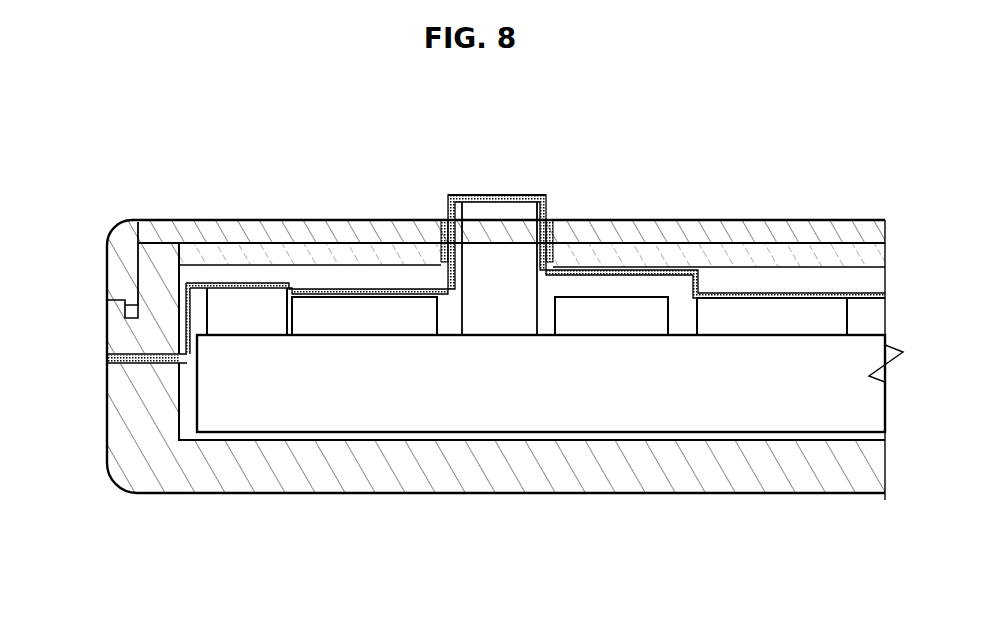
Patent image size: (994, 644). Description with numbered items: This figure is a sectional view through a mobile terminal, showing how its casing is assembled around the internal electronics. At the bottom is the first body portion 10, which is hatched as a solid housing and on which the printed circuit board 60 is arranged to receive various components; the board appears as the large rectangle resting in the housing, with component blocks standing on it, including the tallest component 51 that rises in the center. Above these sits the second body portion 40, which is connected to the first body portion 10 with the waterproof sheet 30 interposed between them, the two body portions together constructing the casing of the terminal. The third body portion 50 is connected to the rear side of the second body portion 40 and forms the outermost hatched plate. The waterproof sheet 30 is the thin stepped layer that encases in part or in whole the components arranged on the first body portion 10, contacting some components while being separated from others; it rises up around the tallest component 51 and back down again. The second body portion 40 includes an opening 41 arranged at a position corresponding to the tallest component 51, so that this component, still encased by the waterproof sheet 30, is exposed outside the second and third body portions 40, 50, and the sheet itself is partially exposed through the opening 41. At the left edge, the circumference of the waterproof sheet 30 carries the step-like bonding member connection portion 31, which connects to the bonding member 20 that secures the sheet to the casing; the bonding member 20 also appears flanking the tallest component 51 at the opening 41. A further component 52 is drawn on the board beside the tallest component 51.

The first body portion 10 is at (394, 488).
The bonding member 20 is at (447, 222).
The waterproof sheet 30 is at (332, 290).
The bonding member connection portion 31 is at (130, 352).
The second body portion 40 is at (730, 252).
The opening 41 is at (551, 228).
The third body portion 50 is at (253, 232).
The tallest component 51 is at (500, 213).
The electronic component 52 is at (613, 306).
The printed circuit board 60 is at (585, 418).